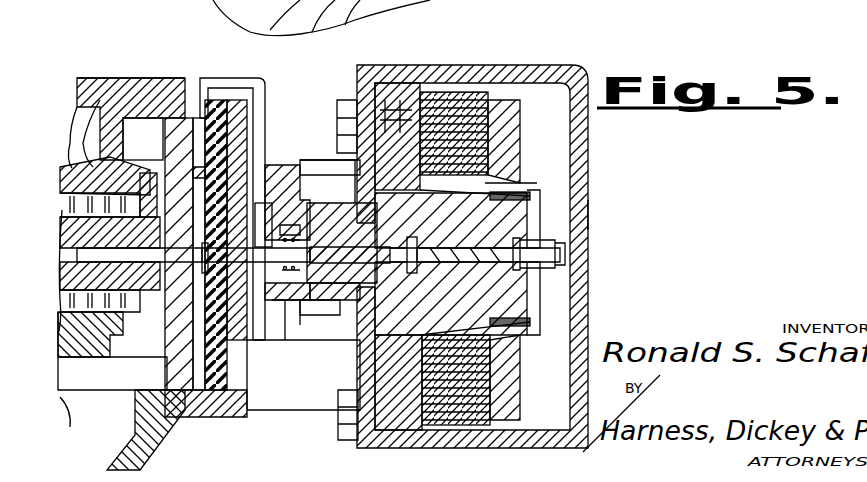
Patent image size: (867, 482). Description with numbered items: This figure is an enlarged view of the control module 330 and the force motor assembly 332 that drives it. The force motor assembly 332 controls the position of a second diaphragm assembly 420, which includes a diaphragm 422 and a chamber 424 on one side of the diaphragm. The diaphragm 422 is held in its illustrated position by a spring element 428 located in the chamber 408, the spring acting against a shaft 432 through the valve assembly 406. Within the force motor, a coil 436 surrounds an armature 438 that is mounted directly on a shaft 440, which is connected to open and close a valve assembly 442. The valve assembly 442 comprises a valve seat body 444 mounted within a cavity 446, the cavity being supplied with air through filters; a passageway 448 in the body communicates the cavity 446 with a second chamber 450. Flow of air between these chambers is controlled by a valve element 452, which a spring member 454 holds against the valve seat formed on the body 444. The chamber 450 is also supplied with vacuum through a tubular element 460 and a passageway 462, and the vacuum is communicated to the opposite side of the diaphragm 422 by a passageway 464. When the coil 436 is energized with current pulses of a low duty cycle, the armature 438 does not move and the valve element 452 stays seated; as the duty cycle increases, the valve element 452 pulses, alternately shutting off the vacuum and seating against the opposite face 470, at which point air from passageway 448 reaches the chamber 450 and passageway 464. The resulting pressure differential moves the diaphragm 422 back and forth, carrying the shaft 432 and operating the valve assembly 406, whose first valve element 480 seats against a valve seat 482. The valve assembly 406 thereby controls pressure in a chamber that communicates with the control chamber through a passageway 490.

The control module 330 is at (246, 424).
The force motor assembly 332 is at (618, 224).
The valve assembly 406 is at (78, 368).
The chamber 408 is at (66, 218).
The second diaphragm assembly 420 is at (240, 110).
The diaphragm 422 is at (200, 372).
The chamber 424 is at (133, 413).
The spring element 428 is at (62, 178).
The shaft 432 is at (62, 285).
The coil 436 is at (540, 328).
The armature 438 is at (540, 214).
The shaft 440 is at (430, 294).
The valve assembly 442 is at (293, 300).
The valve seat body 444 is at (295, 215).
The cavity 446 is at (318, 305).
The passageway 448 is at (410, 238).
The second chamber 450 is at (283, 292).
The valve element 452 is at (318, 172).
The spring member 454 is at (277, 290).
The tubular element 460 is at (250, 82).
The passageway 462 is at (282, 272).
The passageway 464 is at (268, 300).
The opposite face 470 is at (276, 206).
The first valve element 480 is at (131, 119).
The valve seat 482 is at (103, 107).
The passageway 490 is at (80, 112).